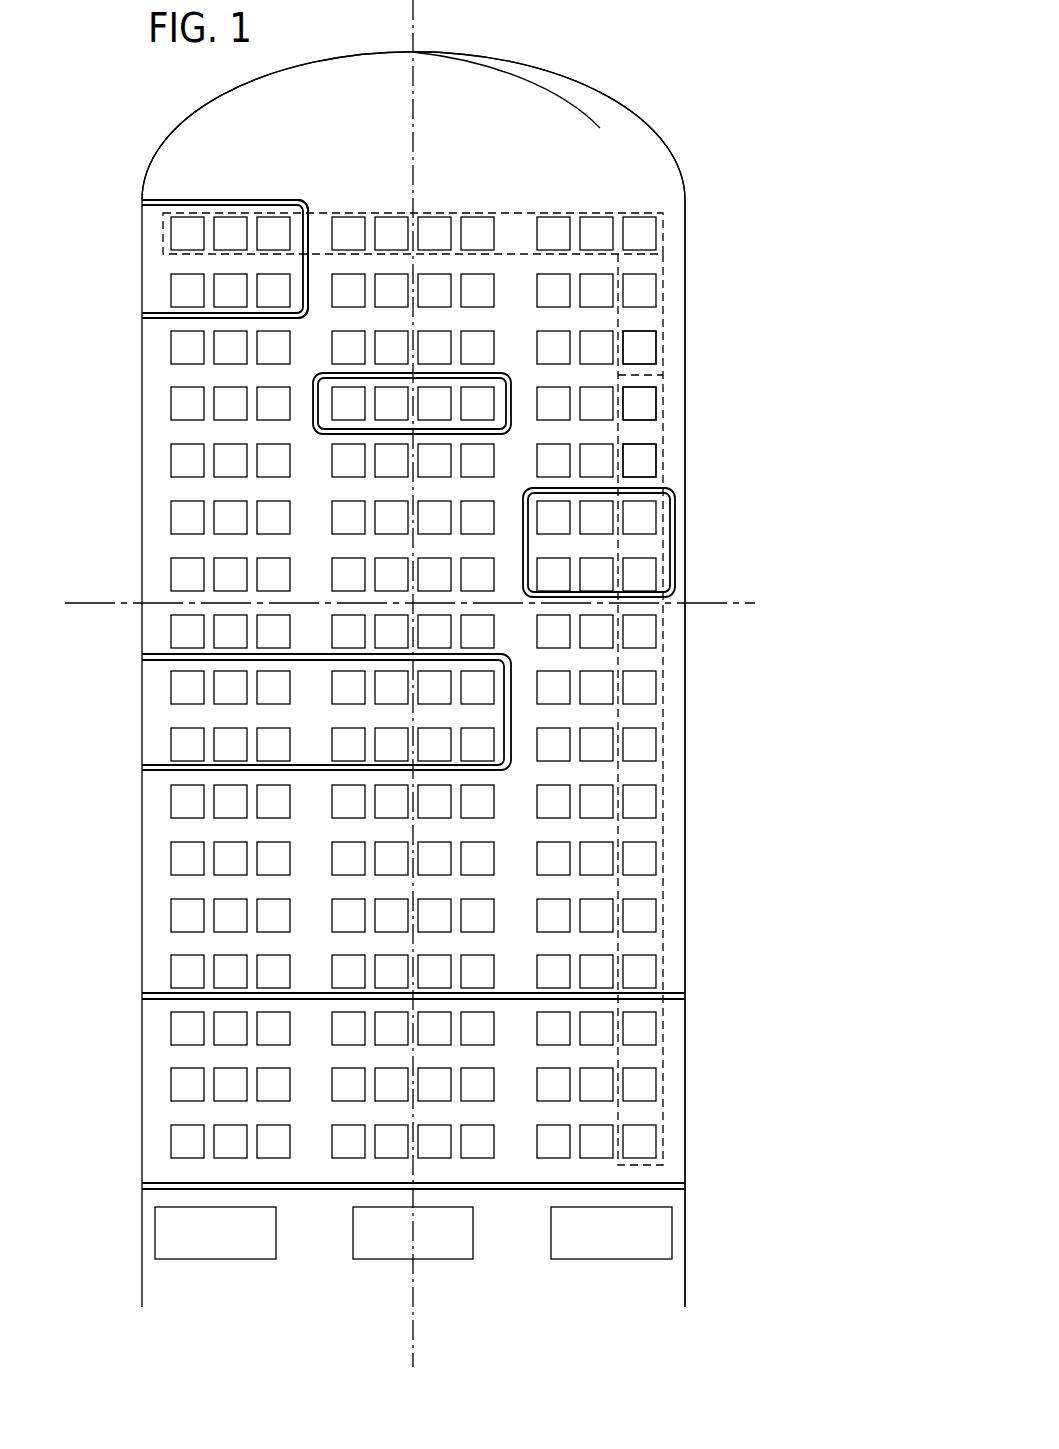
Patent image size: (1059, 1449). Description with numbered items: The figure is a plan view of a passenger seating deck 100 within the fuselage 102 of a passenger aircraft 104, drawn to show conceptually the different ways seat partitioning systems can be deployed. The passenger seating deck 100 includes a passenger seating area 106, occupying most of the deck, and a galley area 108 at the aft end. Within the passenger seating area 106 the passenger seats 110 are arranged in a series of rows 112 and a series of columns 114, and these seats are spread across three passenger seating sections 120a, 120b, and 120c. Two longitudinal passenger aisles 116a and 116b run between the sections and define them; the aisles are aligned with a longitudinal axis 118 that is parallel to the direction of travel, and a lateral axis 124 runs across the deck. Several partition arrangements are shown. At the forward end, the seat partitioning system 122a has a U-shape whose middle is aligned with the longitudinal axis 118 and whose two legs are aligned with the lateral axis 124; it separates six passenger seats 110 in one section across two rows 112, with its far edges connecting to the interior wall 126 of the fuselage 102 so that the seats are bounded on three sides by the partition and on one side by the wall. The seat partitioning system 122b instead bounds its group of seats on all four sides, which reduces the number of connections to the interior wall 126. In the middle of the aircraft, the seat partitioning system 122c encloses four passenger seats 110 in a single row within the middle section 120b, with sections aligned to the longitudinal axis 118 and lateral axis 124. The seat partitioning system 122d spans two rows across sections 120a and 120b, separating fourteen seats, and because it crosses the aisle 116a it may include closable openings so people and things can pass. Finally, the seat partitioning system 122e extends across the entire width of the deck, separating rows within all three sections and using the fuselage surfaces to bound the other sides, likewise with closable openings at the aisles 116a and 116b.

The passenger seating deck 100 is at (642, 132).
The fuselage 102 is at (685, 315).
The passenger aircraft 104 is at (640, 65).
The passenger seating area 106 is at (545, 95).
The galley area 108 is at (672, 1280).
The passenger seats 110 is at (650, 453).
The rows 112 is at (663, 235).
The columns 114 is at (663, 288).
The longitudinal passenger aisle 116a is at (295, 838).
The longitudinal passenger aisle 116b is at (535, 838).
The longitudinal axis 118 is at (413, 28).
The passenger seating section 120a is at (215, 178).
The passenger seating section 120b is at (452, 178).
The passenger seating section 120c is at (605, 182).
The seat partitioning system 122a is at (160, 320).
The seat partitioning system 122b is at (673, 528).
The seat partitioning system 122c is at (313, 420).
The seat partitioning system 122d is at (160, 658).
The seat partitioning system 122e is at (670, 993).
The lateral axis 124 is at (713, 603).
The interior wall 126 is at (142, 270).